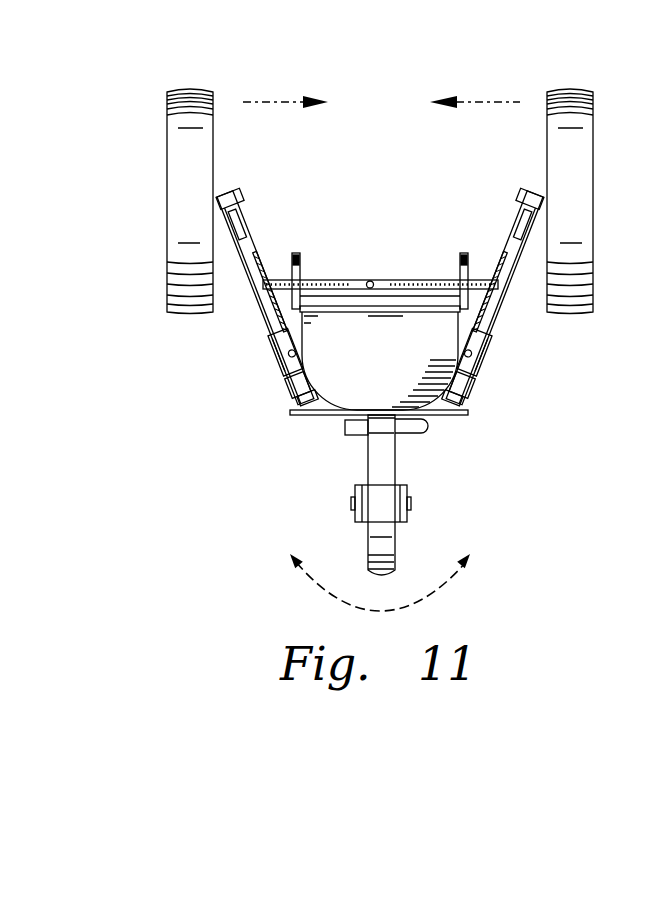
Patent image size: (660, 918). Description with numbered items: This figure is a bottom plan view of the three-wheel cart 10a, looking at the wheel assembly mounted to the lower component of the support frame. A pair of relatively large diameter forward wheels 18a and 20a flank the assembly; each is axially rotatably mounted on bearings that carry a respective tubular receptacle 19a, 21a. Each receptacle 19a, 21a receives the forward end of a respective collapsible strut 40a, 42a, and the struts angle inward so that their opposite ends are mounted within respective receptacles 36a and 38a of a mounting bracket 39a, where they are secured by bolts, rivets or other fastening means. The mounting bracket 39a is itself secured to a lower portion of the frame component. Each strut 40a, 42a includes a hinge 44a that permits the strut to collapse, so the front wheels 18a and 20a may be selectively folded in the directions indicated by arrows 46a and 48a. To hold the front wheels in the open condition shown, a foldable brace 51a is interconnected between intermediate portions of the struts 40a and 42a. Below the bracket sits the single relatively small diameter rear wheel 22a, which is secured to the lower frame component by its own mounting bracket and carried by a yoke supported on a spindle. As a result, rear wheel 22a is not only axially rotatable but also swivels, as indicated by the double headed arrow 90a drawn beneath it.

The cart 10a is at (92, 170).
The forward wheel 18a is at (167, 280).
The tubular receptacle 19a is at (238, 197).
The forward wheel 20a is at (593, 242).
The tubular receptacle 21a is at (534, 196).
The swiveling wheel 22a is at (367, 548).
The receptacle 36a is at (293, 400).
The receptacle 38a is at (467, 408).
The mounting bracket 39a is at (331, 414).
The collapsible strut 40a is at (258, 260).
The collapsible strut 42a is at (503, 258).
The hinge 44a is at (284, 358).
The arrow 46a is at (284, 100).
The arrow 48a is at (495, 100).
The foldable brace 51a is at (372, 280).
The double headed arrow 90a is at (466, 560).